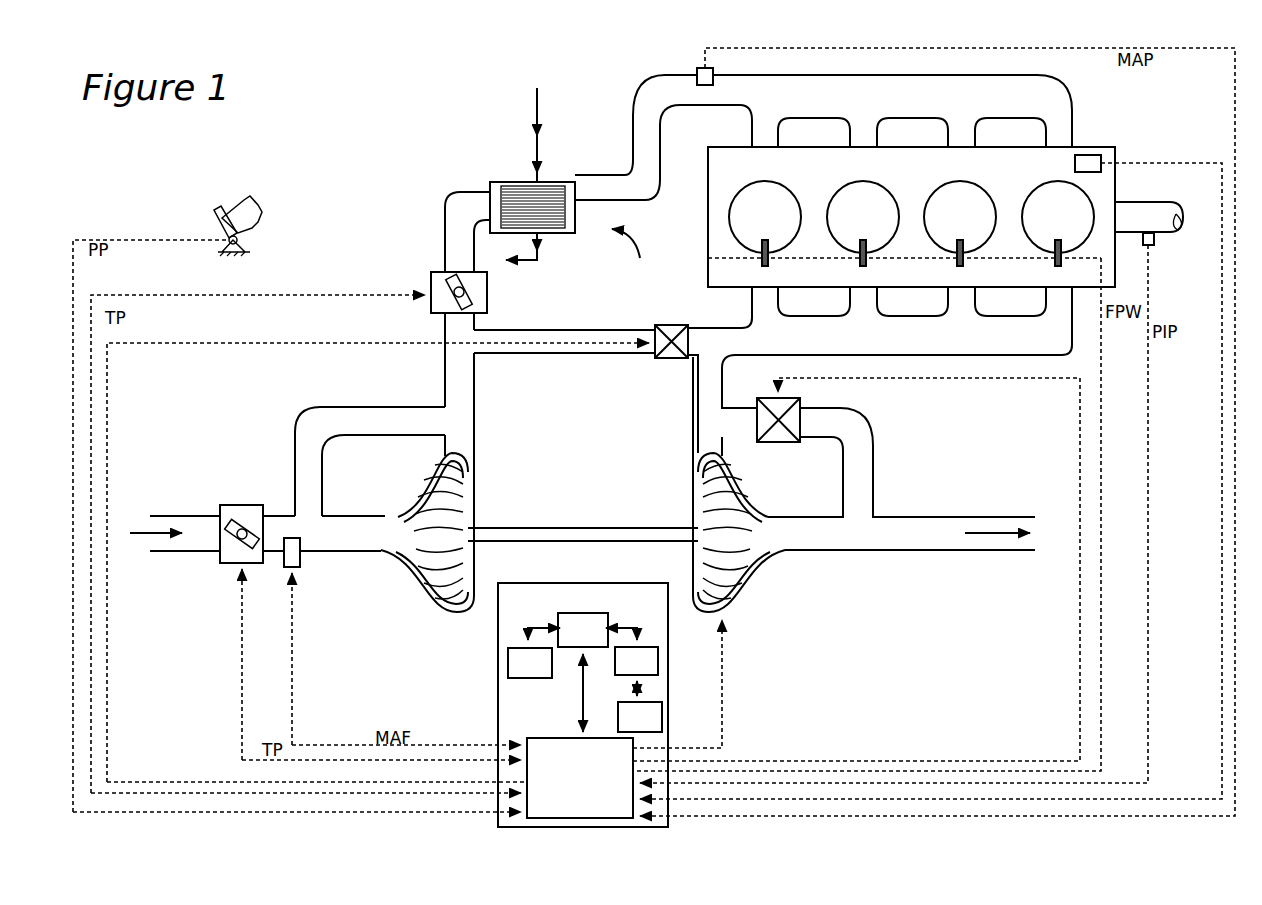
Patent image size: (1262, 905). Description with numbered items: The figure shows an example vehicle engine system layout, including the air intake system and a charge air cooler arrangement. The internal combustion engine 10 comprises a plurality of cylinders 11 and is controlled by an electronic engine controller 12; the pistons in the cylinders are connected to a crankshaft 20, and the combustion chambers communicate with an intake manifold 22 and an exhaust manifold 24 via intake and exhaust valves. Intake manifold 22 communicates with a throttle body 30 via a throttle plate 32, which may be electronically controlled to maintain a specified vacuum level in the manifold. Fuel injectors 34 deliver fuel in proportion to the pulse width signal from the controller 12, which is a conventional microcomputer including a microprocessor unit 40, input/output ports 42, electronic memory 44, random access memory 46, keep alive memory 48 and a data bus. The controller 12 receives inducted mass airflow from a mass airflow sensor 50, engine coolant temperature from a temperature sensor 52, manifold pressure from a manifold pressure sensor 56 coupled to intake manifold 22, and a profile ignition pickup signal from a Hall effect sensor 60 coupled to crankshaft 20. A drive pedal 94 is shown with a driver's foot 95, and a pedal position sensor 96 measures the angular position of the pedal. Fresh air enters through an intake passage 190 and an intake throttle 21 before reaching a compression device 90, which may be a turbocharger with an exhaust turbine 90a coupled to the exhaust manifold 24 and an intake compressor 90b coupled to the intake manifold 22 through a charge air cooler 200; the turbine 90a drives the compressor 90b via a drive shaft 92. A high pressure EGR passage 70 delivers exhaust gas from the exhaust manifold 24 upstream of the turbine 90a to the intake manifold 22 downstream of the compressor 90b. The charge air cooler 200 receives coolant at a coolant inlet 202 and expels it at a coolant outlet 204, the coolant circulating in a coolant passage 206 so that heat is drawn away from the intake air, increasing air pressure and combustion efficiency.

The engine system 10 is at (1011, 175).
The cylinders 11 is at (1068, 226).
The electronic engine controller 12 is at (576, 705).
The crankshaft 20 is at (1156, 202).
The air intake throttle 21 is at (234, 505).
The intake manifold 22 is at (801, 109).
The exhaust manifold 24 is at (778, 348).
The throttle body 30 is at (453, 275).
The throttle plate 32 is at (470, 306).
The fuel injectors 34 is at (763, 258).
The microprocessor unit 40 is at (553, 628).
The input/output ports 42 is at (627, 813).
The electronic memory 44 is at (508, 668).
The random access memory 46 is at (656, 660).
The keep alive memory 48 is at (661, 705).
The mass airflow sensor 50 is at (302, 557).
The temperature sensor 52 is at (1090, 155).
The manifold pressure sensor 56 is at (699, 70).
The Hall effect sensor 60 is at (1153, 246).
The high pressure EGR passage 70 is at (560, 331).
The compression device 90 is at (589, 488).
The exhaust turbine 90a is at (728, 492).
The intake compressor 90b is at (432, 573).
The drive shaft 92 is at (520, 527).
The drive pedal 94 is at (217, 222).
The driver's foot 95 is at (262, 210).
The pedal position sensor 96 is at (248, 240).
The intake passage 190 is at (217, 543).
The charge air cooler 200 is at (495, 183).
The coolant inlet 202 is at (537, 105).
The coolant outlet 204 is at (542, 243).
The coolant passage 206 is at (631, 256).